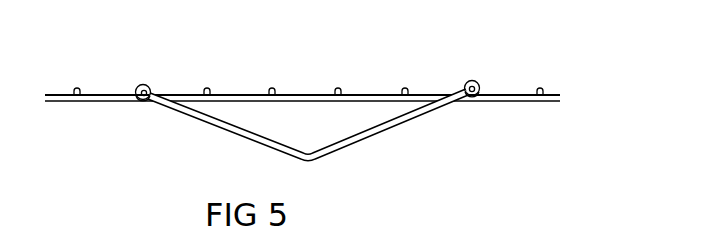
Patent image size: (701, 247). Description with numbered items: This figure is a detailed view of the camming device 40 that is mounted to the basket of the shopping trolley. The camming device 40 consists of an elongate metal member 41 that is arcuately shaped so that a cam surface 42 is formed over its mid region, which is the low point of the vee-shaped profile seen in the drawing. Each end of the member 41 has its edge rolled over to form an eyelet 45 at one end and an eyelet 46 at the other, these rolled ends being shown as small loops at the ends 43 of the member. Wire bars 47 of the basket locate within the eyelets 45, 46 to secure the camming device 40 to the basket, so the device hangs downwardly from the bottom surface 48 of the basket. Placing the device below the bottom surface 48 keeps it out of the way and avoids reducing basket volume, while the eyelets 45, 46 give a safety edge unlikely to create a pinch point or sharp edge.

The camming device 40 is at (315, 151).
The elongate metal member 41 is at (227, 128).
The cam surface 42 is at (308, 161).
The hinge ends 43 is at (140, 64).
The eyelet 45 is at (143, 100).
The eyelet 46 is at (481, 99).
The wire bars 47 is at (150, 82).
The bottom surface 48 is at (296, 76).